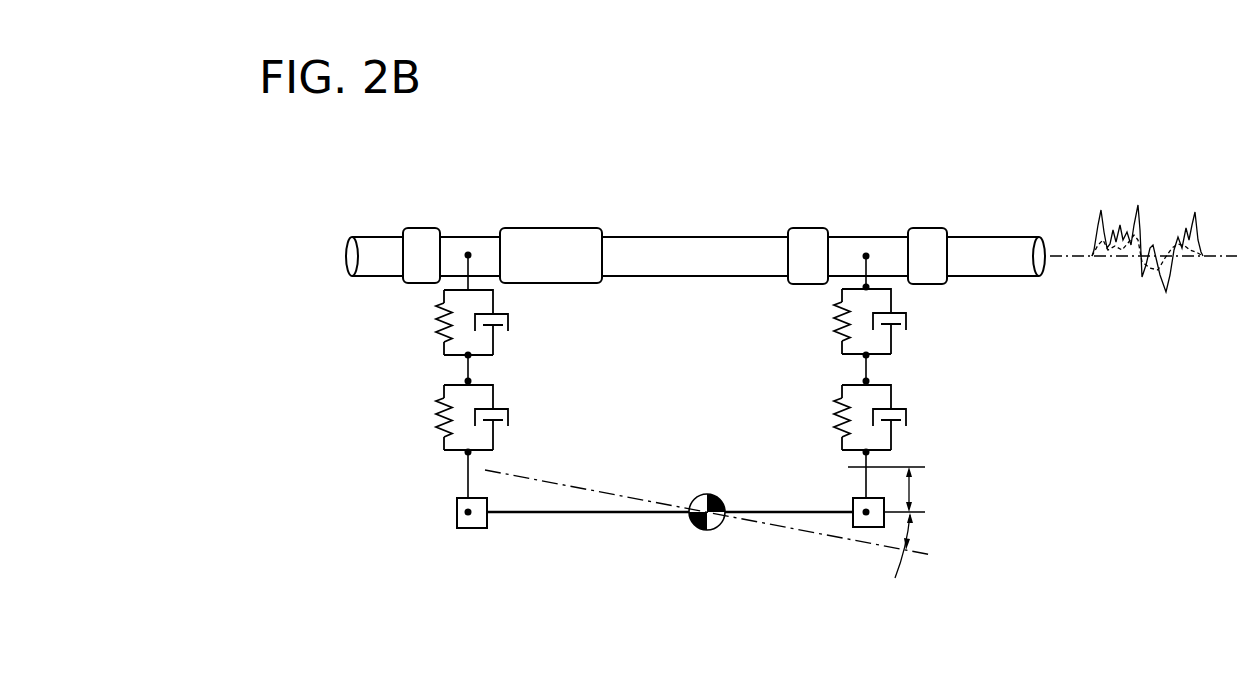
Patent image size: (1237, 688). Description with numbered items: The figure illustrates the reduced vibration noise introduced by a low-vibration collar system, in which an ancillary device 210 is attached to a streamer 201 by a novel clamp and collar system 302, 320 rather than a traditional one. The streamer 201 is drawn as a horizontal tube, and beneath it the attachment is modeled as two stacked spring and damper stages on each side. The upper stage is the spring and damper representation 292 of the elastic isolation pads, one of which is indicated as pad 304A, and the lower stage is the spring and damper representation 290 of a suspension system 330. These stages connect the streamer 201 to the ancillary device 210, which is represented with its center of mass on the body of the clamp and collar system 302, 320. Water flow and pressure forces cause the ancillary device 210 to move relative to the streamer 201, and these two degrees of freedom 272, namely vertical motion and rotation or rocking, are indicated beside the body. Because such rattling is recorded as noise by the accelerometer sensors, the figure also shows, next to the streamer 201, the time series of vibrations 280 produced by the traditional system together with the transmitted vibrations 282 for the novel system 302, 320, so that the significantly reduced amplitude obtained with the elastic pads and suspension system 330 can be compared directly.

The streamer 201 is at (984, 226).
The time series of vibrations 280 is at (1137, 207).
The transmitted vibrations 282 is at (1133, 232).
The spring and damper representation 292 is at (601, 322).
The spring and damper representation 290 is at (601, 423).
The elastic isolation pad 304A is at (409, 317).
The suspension system 330 is at (409, 419).
The clamp 302 is at (610, 528).
The collar 320 is at (458, 517).
The ancillary device 210 is at (695, 526).
The two degrees of freedom 272 is at (945, 478).